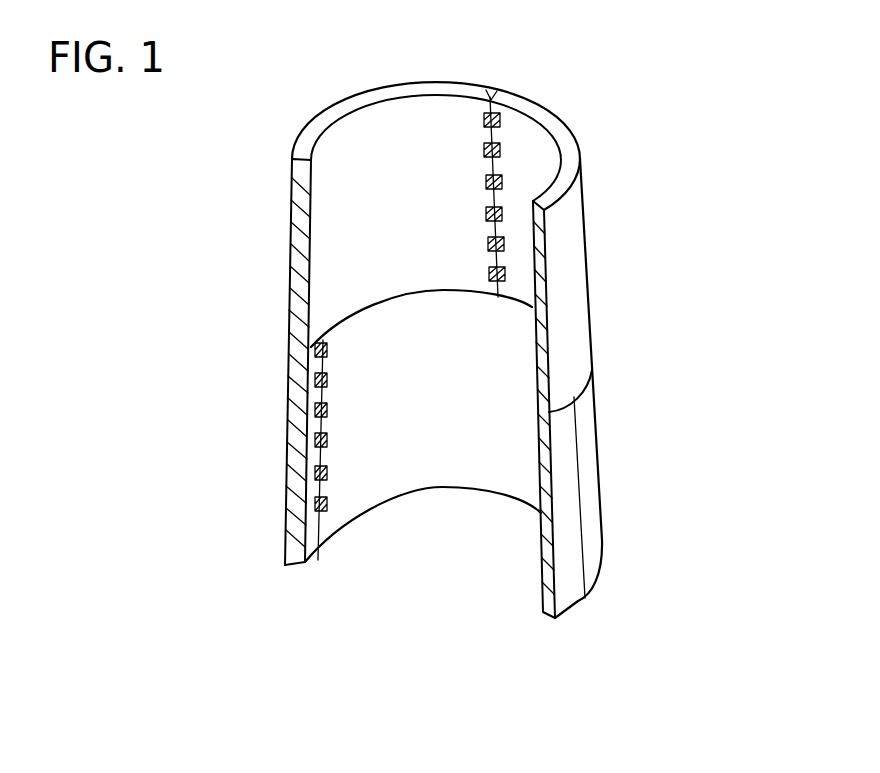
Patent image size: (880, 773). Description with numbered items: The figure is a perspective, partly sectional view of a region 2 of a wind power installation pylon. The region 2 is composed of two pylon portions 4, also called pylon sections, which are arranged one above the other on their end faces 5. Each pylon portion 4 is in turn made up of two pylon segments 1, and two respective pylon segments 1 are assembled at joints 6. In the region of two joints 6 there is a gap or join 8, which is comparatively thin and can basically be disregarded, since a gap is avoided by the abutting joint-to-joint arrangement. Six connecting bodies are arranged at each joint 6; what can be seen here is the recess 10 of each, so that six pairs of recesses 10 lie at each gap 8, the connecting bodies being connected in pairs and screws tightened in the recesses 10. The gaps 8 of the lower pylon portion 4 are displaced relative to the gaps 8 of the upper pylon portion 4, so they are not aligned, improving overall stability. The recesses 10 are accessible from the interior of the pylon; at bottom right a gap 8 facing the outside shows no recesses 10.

The pylon segment 1 is at (336, 229).
The region of a wind power installation pylon 2 is at (662, 100).
The pylon portion 4 is at (641, 255).
The end face 5 is at (342, 108).
The joint 6 is at (487, 90).
The gap or join 8 is at (490, 137).
The recess 10 is at (487, 272).